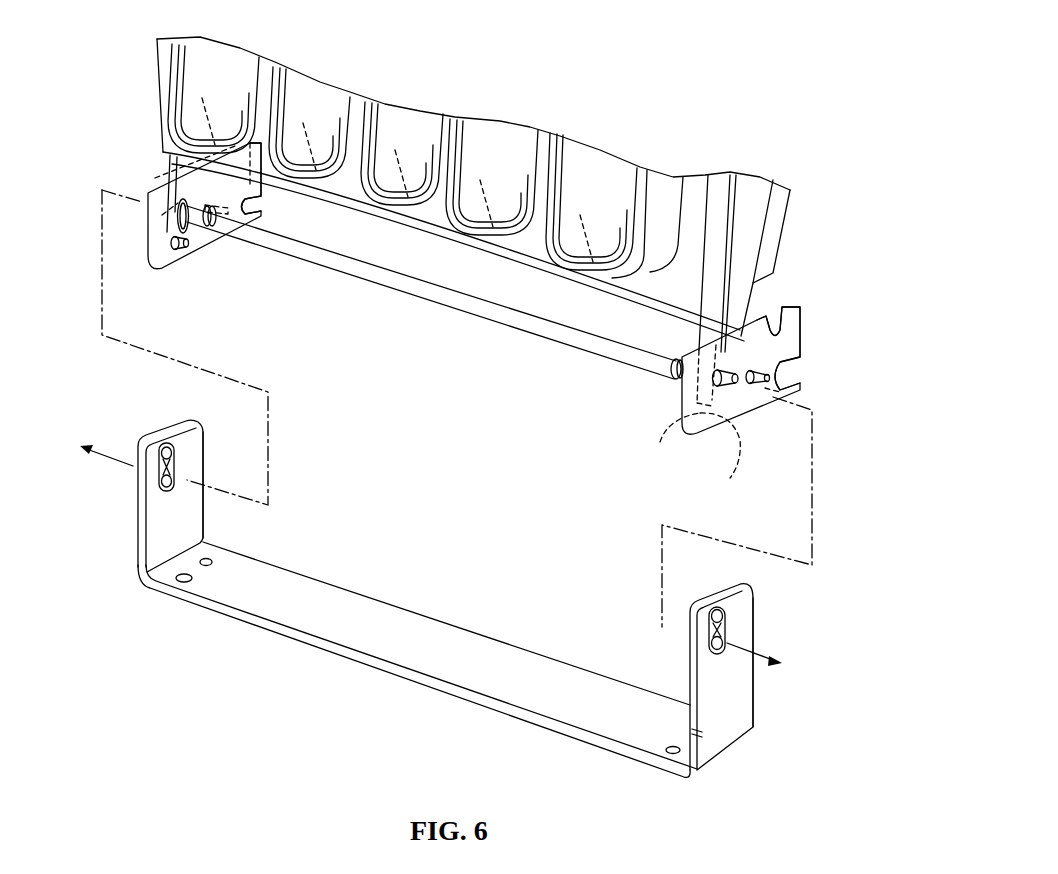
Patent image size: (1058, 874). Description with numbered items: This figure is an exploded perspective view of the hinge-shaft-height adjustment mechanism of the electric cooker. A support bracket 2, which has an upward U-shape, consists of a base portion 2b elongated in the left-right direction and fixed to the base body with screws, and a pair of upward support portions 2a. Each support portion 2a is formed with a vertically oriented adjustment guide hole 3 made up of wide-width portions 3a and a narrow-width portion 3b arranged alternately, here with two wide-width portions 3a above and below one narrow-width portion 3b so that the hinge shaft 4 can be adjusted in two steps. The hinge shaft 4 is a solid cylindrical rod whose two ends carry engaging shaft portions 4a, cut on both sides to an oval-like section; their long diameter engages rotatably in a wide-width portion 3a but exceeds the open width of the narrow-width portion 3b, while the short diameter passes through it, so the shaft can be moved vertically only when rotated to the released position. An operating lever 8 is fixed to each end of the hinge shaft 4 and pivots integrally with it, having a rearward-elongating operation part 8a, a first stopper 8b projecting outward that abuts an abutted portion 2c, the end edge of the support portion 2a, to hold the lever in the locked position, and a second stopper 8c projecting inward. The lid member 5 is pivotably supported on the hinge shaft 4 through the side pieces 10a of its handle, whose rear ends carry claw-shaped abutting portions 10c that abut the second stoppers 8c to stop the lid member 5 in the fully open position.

The support bracket 2 is at (757, 686).
The support portion 2a is at (153, 527).
The base portion 2b is at (403, 640).
The abutted portion 2c is at (203, 507).
The adjustment guide hole 3 is at (177, 450).
The wide-width portion 3a is at (162, 478).
The narrow-width portion 3b is at (175, 472).
The hinge shaft 4 is at (500, 320).
The engaging shaft portion 4a is at (148, 190).
The lid member 5 is at (473, 189).
The operating lever 8 is at (176, 268).
The operation part 8a is at (262, 200).
The first stopper 8b is at (247, 226).
The second stopper 8c is at (192, 244).
The side piece 10a is at (167, 180).
The abutting portion 10c is at (190, 249).